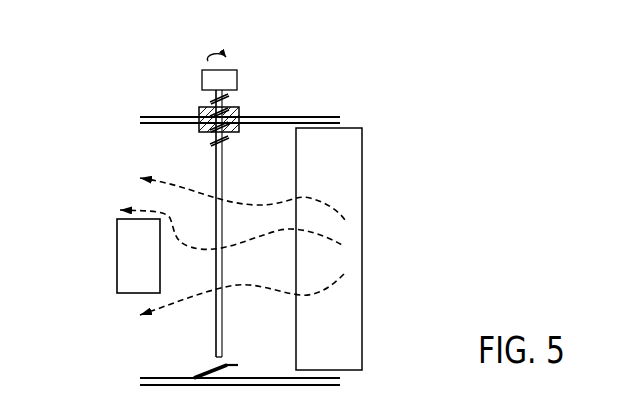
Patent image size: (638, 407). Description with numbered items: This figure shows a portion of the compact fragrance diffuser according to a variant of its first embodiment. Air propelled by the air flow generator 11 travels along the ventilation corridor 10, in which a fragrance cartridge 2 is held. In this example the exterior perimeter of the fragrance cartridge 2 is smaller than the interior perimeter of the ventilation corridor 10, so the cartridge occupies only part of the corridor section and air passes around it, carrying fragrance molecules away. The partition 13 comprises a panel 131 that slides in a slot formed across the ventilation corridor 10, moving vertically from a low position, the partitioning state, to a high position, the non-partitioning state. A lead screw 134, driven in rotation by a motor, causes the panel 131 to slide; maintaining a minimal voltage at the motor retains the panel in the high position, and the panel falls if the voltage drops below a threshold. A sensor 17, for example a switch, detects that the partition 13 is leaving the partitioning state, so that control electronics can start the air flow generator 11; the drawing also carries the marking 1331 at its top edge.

The fragrance cartridge 2 is at (138, 240).
The ventilation corridor 10 is at (289, 122).
The air flow generator 11 is at (346, 197).
The partition 13 is at (200, 70).
The sensor 17 is at (207, 372).
The panel 131 is at (210, 218).
The lead screw 134 is at (236, 112).
The shaft end portion 1331 is at (383, 4).